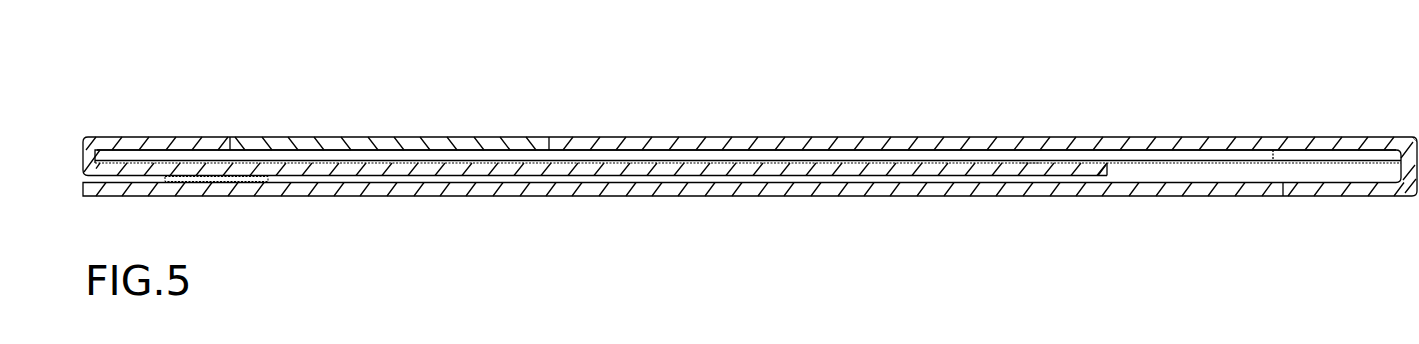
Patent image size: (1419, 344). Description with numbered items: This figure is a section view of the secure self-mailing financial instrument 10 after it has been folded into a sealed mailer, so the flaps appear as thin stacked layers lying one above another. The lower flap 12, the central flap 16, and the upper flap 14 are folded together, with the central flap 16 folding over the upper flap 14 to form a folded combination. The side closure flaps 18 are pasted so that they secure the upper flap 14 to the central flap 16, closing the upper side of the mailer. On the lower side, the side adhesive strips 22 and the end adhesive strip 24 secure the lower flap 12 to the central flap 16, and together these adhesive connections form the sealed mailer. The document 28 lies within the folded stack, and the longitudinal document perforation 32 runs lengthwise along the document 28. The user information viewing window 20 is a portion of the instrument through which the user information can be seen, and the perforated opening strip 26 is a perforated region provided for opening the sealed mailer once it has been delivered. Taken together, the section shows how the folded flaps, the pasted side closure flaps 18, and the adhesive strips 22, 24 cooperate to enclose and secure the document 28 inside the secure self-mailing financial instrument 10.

The secure self-mailing financial instrument 10 is at (1283, 75).
The lower flap 12 is at (490, 197).
The upper flap 14 is at (933, 148).
The central flap 16 is at (1025, 168).
The side closure flaps 18 is at (123, 155).
The user information viewing window 20 is at (440, 145).
The side adhesive strips 22 is at (990, 182).
The end adhesive strip 24 is at (213, 181).
The perforated opening strip 26 is at (1272, 193).
The document 28 is at (1087, 171).
The longitudinal document perforation 32 is at (697, 173).